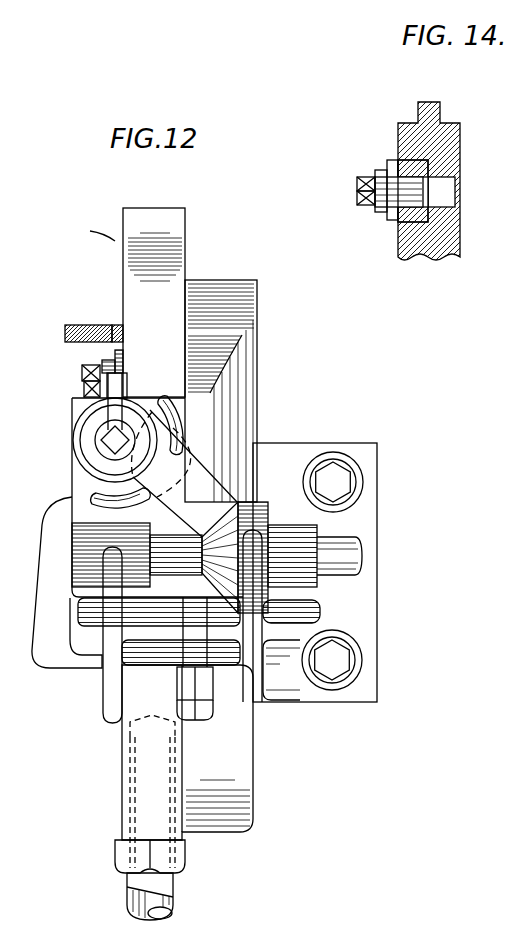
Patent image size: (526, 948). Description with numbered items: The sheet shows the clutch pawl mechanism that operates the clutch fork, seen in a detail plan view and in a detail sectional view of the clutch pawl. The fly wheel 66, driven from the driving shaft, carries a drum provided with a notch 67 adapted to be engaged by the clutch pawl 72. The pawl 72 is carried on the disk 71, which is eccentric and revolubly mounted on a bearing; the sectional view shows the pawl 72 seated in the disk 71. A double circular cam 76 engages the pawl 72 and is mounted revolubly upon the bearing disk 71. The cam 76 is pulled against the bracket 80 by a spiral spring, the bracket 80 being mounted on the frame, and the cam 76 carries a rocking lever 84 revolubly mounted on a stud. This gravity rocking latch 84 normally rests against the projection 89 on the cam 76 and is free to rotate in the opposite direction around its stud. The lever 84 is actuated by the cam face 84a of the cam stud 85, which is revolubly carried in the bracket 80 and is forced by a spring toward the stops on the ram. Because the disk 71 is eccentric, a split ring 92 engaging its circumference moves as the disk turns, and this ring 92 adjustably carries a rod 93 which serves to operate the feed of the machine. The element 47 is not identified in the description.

In FIG. 12, the split ring 92 is at (162, 288).
In FIG. 12, the fly wheel 66 is at (67, 328).
In FIG. 12, the notch 67 is at (115, 330).
In FIG. 12, the clutch pawl 72 is at (113, 353).
In FIG. 14, the clutch pawl 72 is at (423, 213).
In FIG. 12, the shaft collar with square bore 47 is at (85, 437).
In FIG. 12, the projection 89 is at (125, 502).
In FIG. 12, the rocking lever 84 is at (170, 448).
In FIG. 12, the cam face 84a is at (258, 518).
In FIG. 12, the cam stud 85 is at (345, 558).
In FIG. 12, the bracket 80 is at (112, 687).
In FIG. 12, the double circular cam 76 is at (232, 805).
In FIG. 12, the rod 93 is at (145, 908).
In FIG. 14, the disk 71 is at (447, 147).